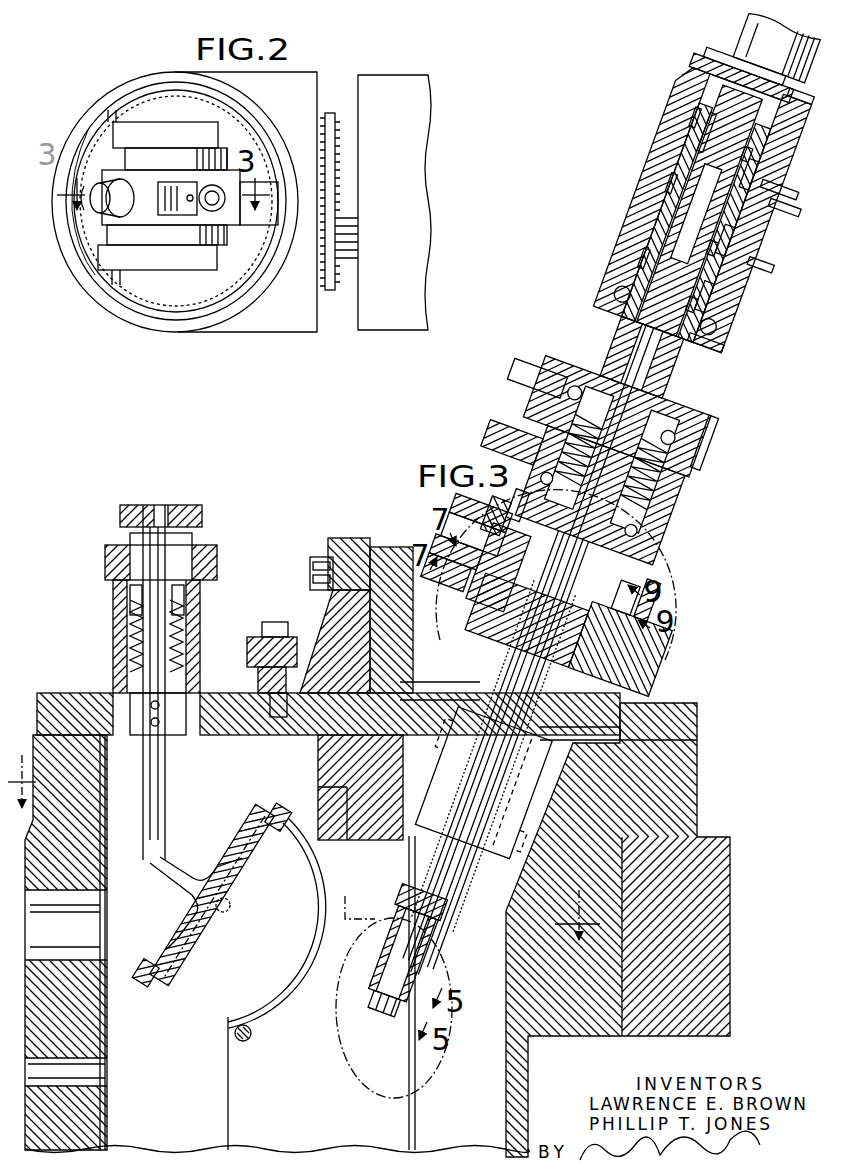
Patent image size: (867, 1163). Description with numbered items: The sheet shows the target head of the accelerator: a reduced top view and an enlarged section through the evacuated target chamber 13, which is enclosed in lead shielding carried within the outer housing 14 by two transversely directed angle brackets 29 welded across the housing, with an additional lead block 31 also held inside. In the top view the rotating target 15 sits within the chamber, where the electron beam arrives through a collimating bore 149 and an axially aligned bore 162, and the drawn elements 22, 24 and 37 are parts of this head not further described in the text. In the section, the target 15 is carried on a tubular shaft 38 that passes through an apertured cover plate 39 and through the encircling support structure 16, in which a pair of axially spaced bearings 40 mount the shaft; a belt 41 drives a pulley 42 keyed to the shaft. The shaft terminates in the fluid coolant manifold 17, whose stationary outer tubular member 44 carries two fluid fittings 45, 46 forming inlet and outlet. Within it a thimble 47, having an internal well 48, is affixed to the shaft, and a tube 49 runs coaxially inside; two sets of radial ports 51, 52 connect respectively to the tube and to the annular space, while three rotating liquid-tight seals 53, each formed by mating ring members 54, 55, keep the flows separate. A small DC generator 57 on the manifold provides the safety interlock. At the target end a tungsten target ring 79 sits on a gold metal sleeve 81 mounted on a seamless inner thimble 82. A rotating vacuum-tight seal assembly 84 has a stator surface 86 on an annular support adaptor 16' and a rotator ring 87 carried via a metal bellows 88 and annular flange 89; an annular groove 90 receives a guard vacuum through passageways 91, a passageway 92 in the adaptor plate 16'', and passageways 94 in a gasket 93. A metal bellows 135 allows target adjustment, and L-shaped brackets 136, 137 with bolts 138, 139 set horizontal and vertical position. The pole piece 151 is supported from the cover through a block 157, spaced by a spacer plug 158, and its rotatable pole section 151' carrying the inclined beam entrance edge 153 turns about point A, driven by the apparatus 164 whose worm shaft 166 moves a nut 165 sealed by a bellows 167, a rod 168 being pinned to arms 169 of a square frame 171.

In FIG. 2, the evacuated target chamber 13 is at (258, 232).
In FIG. 3, the evacuated target chamber 13 is at (700, 728).
In FIG. 2, the outer housing 14 is at (142, 317).
In FIG. 3, the rotating target 15 is at (366, 975).
In FIG. 3, the support structure 16 is at (455, 406).
In FIG. 3, the annular support adaptor 16' is at (545, 689).
In FIG. 3, the adaptor plate 16'' is at (628, 711).
In FIG. 2, the fluid coolant manifold 17 is at (98, 248).
In FIG. 3, the fluid coolant manifold 17 is at (620, 150).
In FIG. 2, the slide members 22 is at (178, 162).
In FIG. 2, the guide plates 24 is at (208, 142).
In FIG. 2, the angle brackets 29 is at (122, 104).
In FIG. 2, the lead block 31 is at (78, 140).
In FIG. 2, the support block 37 is at (388, 315).
In FIG. 3, the tubular shaft 38 is at (457, 903).
In FIG. 3, the cover plate 39 is at (223, 707).
In FIG. 3, the bearings 40 is at (690, 470).
In FIG. 3, the belt 41 is at (520, 375).
In FIG. 3, the pulley 42 is at (715, 430).
In FIG. 3, the outer tubular member 44 is at (655, 172).
In FIG. 3, the fluid fitting 45 is at (800, 212).
In FIG. 3, the fluid fitting 46 is at (770, 270).
In FIG. 3, the thimble 47 is at (683, 92).
In FIG. 3, the internal well 48 is at (797, 193).
In FIG. 3, the tube 49 is at (650, 240).
In FIG. 3, the radial ports 51 is at (690, 178).
In FIG. 3, the radial ports 52 is at (660, 225).
In FIG. 3, the rotating liquid-tight seals 53 is at (690, 130).
In FIG. 3, the ring member 54 is at (795, 172).
In FIG. 3, the ring member 55 is at (800, 148).
In FIG. 3, the DC generator 57 is at (748, 44).
In FIG. 3, the target ring 79 is at (350, 1050).
In FIG. 3, the metal sleeve 81 is at (377, 1006).
In FIG. 3, the inner thimble 82 is at (800, 118).
In FIG. 3, the rotating vacuum-tight seal assembly 84 is at (690, 370).
In FIG. 3, the flat annular surface 86 is at (647, 657).
In FIG. 3, the ring 87 is at (667, 213).
In FIG. 3, the metal bellows 88 is at (505, 550).
In FIG. 3, the annular flange 89 is at (520, 535).
In FIG. 3, the annular groove 90 is at (640, 666).
In FIG. 3, the passageways 91 is at (637, 680).
In FIG. 3, the passageway 92 is at (455, 622).
In FIG. 3, the vacuum-tight gasket 93 is at (460, 602).
In FIG. 3, the passageways 94 is at (495, 634).
In FIG. 3, the metal bellows 135 is at (420, 780).
In FIG. 3, the first L-shaped bracket 136 is at (337, 612).
In FIG. 3, the second L-shaped bracket 137 is at (388, 552).
In FIG. 3, the bolt 138 is at (277, 637).
In FIG. 3, the bolt 139 is at (313, 570).
In FIG. 3, the collimating bore 149 is at (107, 915).
In FIG. 3, the pole piece 151 is at (435, 993).
In FIG. 3, the rotatable pole section 151' is at (247, 933).
In FIG. 3, the beam entrance edge 153 is at (213, 933).
In FIG. 3, the block 157 is at (330, 770).
In FIG. 3, the spacer plug 158 is at (237, 1040).
In FIG. 3, the bore 162 is at (100, 1077).
In FIG. 2, the apparatus 164 is at (235, 238).
In FIG. 3, the apparatus 164 is at (212, 522).
In FIG. 3, the nut 165 is at (117, 638).
In FIG. 3, the worm shaft 166 is at (115, 620).
In FIG. 3, the vacuum tight bellows 167 is at (197, 608).
In FIG. 3, the rod 168 is at (165, 773).
In FIG. 3, the arms 169 is at (180, 862).
In FIG. 3, the square frame 171 is at (188, 910).
In FIG. 3, the point A is at (232, 907).